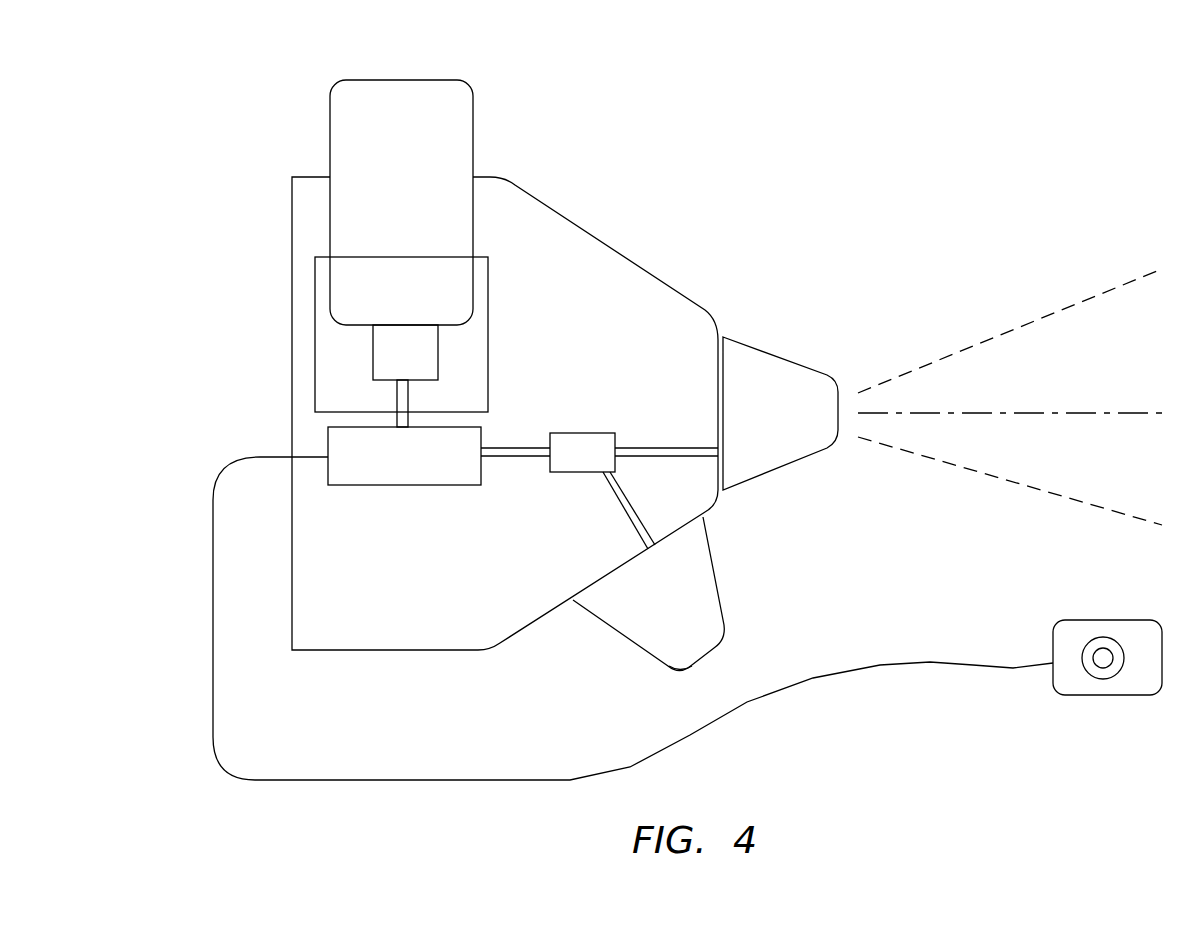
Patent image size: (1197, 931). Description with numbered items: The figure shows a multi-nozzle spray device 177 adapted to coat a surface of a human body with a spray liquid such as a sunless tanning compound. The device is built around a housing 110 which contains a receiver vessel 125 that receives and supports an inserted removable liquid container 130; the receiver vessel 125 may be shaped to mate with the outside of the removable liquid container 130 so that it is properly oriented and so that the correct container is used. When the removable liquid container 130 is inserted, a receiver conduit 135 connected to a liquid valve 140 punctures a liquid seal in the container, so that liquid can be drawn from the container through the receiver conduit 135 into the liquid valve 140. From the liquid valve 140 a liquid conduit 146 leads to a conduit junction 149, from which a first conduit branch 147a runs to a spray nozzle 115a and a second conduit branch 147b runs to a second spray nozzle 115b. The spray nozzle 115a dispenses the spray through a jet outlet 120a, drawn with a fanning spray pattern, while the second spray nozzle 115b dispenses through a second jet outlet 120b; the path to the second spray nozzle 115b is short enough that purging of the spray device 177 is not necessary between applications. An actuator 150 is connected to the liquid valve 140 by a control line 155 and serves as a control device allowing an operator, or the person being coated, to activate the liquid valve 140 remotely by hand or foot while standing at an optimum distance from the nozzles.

The spray device 177 is at (673, 379).
The housing 110 is at (392, 630).
The removable liquid container 130 is at (425, 165).
The receiver vessel 125 is at (492, 289).
The receiver conduit 135 is at (394, 400).
The liquid valve 140 is at (398, 488).
The liquid conduit 146 is at (506, 449).
The conduit branch 147a is at (652, 447).
The conduit branch 147b is at (618, 508).
The conduit junction 149 is at (552, 478).
The spray nozzle 115a is at (752, 340).
The jet outlet 120a is at (845, 411).
The second spray nozzle 115b is at (716, 567).
The second jet outlet 120b is at (712, 652).
The actuator 150 is at (1062, 618).
The control line 155 is at (516, 777).